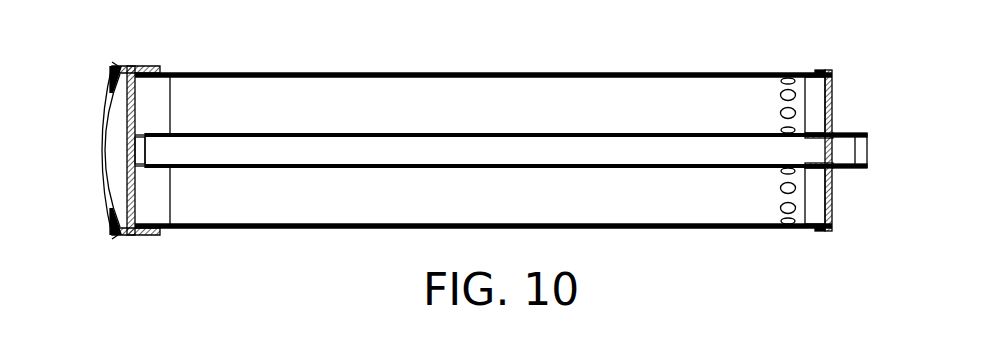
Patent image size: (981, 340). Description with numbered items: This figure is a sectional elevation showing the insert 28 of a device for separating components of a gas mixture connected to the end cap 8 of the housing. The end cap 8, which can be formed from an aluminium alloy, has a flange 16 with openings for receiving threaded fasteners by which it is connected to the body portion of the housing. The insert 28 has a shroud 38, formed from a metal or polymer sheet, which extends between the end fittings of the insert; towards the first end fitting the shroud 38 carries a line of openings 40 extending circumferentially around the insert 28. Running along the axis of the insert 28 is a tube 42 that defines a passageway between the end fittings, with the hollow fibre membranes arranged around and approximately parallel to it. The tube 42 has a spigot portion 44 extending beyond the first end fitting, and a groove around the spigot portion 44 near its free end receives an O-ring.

The end cap 8 is at (110, 102).
The flange 16 is at (142, 65).
The insert 28 is at (682, 73).
The shroud 38 is at (550, 97).
The openings 40 is at (787, 188).
The tube 42 is at (387, 130).
The spigot portion 44 is at (837, 143).